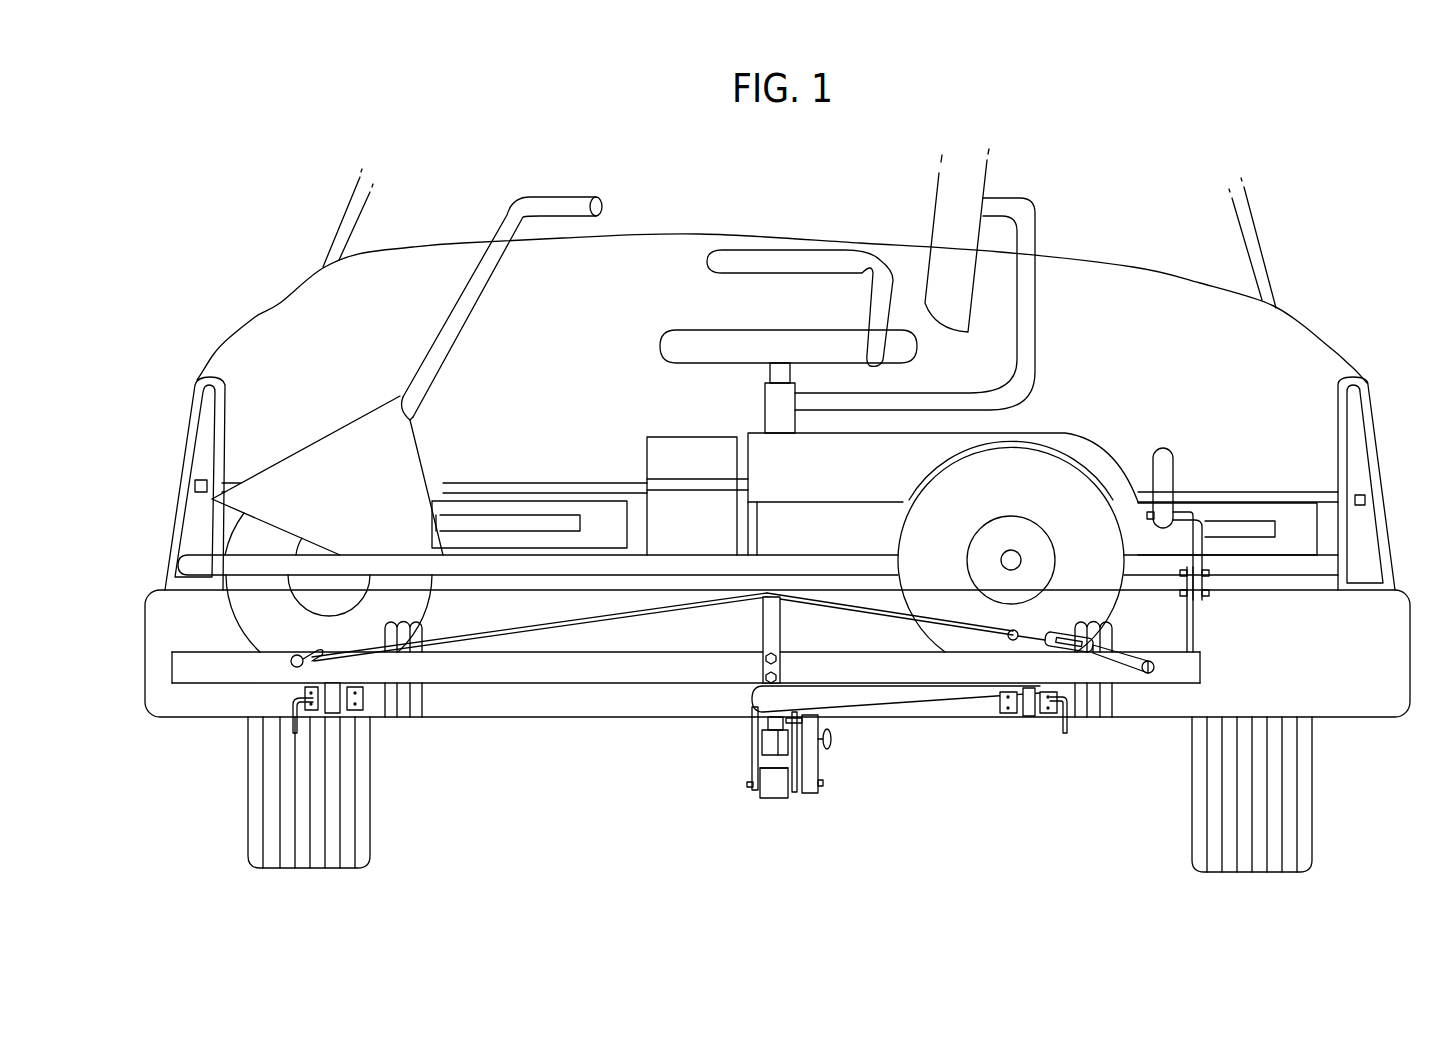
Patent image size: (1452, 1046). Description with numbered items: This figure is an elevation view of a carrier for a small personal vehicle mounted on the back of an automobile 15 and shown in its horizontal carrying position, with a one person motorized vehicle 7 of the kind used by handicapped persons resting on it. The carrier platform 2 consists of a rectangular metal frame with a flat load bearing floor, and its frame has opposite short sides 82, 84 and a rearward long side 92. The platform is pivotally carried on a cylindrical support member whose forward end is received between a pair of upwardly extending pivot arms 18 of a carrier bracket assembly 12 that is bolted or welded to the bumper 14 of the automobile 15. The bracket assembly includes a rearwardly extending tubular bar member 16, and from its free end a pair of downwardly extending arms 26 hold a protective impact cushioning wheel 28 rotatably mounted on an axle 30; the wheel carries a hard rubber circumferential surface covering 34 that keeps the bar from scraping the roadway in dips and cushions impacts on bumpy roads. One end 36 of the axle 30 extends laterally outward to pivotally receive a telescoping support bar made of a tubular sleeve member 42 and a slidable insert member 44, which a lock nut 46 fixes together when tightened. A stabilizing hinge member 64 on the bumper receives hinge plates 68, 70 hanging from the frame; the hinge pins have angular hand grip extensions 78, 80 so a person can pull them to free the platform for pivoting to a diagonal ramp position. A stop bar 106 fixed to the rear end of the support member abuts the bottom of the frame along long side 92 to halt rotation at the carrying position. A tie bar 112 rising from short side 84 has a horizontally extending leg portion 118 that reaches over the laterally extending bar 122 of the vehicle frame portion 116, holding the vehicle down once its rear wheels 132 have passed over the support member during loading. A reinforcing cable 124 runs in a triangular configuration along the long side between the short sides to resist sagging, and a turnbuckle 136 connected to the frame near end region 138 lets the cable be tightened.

The carrier platform 2 is at (590, 675).
The one person motorized vehicle 7 is at (1013, 430).
The carrier bracket assembly 12 is at (752, 727).
The bumper 14 is at (1353, 692).
The automobile 15 is at (1290, 340).
The tubular bar member 16 is at (767, 747).
The pivot arms 18 is at (747, 710).
The downwardly extending arms 26 is at (795, 792).
The impact cushioning wheel 28 is at (768, 800).
The axle 30 is at (750, 785).
The circumferential surface covering 34 is at (778, 800).
The one end of the axle 36 is at (822, 785).
The tubular sleeve member 42 is at (813, 768).
The slidable insert member 44 is at (815, 722).
The lock nut 46 is at (832, 740).
The stabilizing hinge member 64 is at (345, 708).
The hinge plate 68 is at (333, 713).
The hinge plate 70 is at (1042, 718).
The hand grip extension 78 is at (290, 720).
The hand grip extension 80 is at (1072, 727).
The short side 82 is at (170, 662).
The short side 84 is at (1202, 663).
The long side 92 is at (532, 675).
The stop bar 106 is at (913, 695).
The tie bar 112 is at (1188, 510).
The frame portion 116 is at (1173, 457).
The horizontally extending leg portion 118 is at (1142, 500).
The laterally extending bar 122 is at (1167, 528).
The reinforcing cable 124 is at (697, 610).
The rear wheels 132 is at (952, 640).
The turnbuckle 136 is at (1092, 655).
The end region 138 is at (1158, 677).